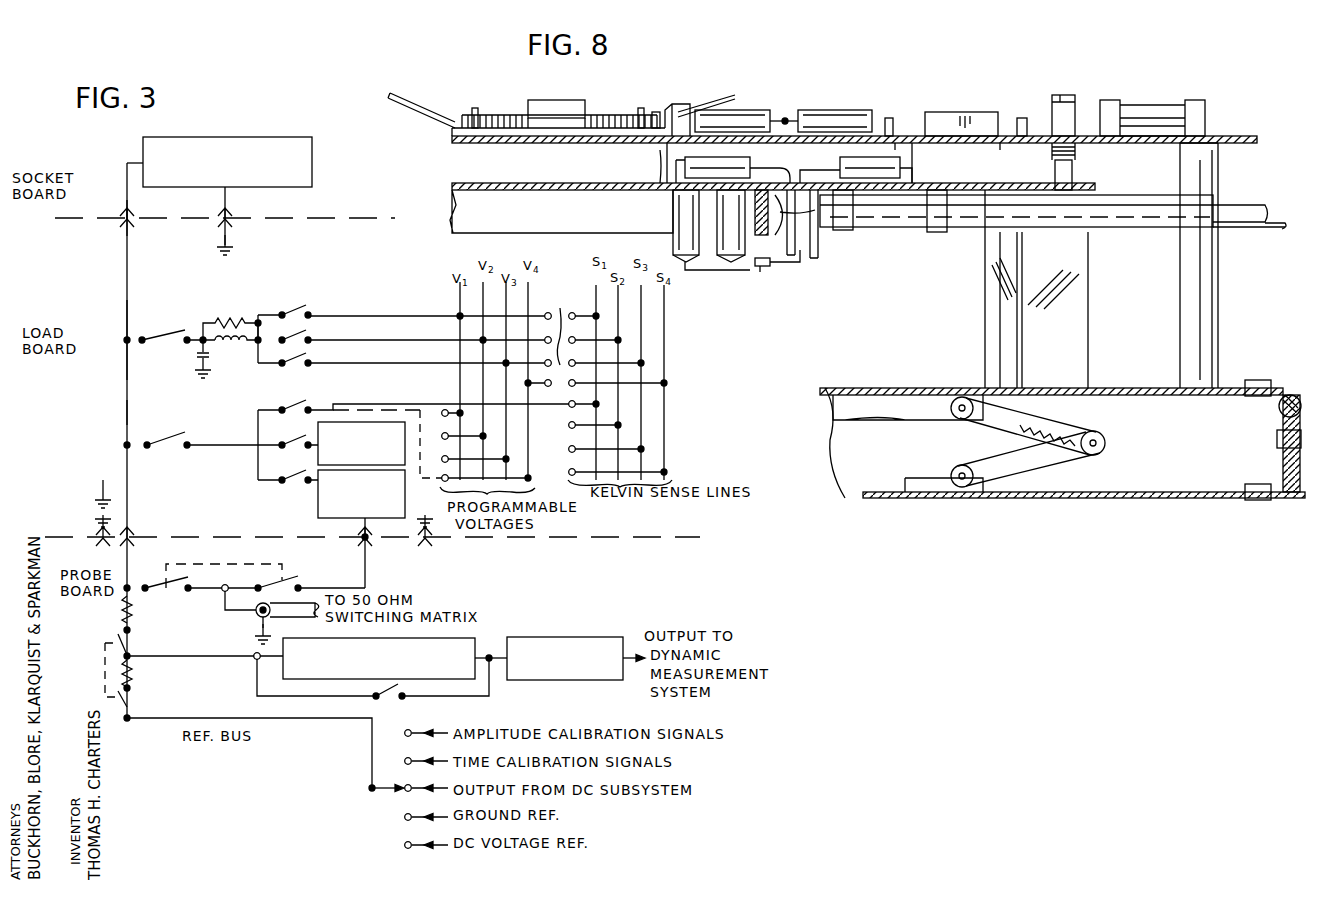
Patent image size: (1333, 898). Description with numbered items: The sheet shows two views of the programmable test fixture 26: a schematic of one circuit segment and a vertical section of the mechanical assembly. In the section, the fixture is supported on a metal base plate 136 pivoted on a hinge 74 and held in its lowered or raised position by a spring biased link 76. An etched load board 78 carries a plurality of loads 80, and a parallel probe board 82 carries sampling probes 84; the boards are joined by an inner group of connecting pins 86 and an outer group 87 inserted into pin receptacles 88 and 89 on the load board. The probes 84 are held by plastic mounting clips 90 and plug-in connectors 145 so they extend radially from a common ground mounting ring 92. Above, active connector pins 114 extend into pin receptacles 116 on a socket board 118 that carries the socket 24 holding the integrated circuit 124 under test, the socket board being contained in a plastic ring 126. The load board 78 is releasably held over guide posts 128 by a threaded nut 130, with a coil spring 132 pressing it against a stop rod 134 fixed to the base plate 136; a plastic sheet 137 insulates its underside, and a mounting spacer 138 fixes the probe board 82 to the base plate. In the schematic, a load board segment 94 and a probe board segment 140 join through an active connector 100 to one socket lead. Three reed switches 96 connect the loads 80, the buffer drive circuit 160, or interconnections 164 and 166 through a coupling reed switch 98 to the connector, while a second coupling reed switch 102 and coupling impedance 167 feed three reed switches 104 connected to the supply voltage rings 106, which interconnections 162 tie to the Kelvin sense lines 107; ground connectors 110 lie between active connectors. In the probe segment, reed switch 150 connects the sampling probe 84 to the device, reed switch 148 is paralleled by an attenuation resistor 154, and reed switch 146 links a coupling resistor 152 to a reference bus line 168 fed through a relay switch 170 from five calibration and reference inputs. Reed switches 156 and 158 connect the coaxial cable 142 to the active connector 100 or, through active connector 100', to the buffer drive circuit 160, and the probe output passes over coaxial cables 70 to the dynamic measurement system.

In FIG. 8, the socket 24 is at (526, 120).
In FIG. 8, the programmable test fixture 26 is at (1230, 112).
In FIG. 3, the coaxial cables 70 is at (631, 648).
In FIG. 8, the hinge 74 is at (1245, 368).
In FIG. 8, the spring biased link 76 is at (1098, 438).
In FIG. 8, the load board 78 is at (1022, 118).
In FIG. 3, the loads 80 is at (390, 422).
In FIG. 8, the loads 80 is at (972, 112).
In FIG. 8, the probe board 82 is at (935, 183).
In FIG. 3, the sampling probe 84 is at (582, 637).
In FIG. 8, the sampling probe 84 is at (920, 228).
In FIG. 8, the inner group of connecting pins 86 is at (685, 175).
In FIG. 8, the outer group of connecting pins 87 is at (895, 150).
In FIG. 8, the pin receptacles 88 is at (678, 108).
In FIG. 8, the pin receptacles 89 is at (892, 118).
In FIG. 8, the mounting clips 90 is at (850, 228).
In FIG. 8, the common ground mounting ring 92 is at (596, 222).
In FIG. 3, the load board segment 94 is at (108, 367).
In FIG. 3, the reed switches 96 is at (282, 477).
In FIG. 8, the reed switches 96 is at (845, 110).
In FIG. 3, the coupling reed switch 98 is at (176, 434).
In FIG. 8, the coupling reed switch 98 is at (787, 118).
In FIG. 3, the active connector 100 is at (95, 412).
In FIG. 3, the active connector 100' is at (384, 553).
In FIG. 3, the second coupling reed switch 102 is at (165, 330).
In FIG. 8, the second coupling reed switch 102 is at (750, 110).
In FIG. 3, the reed switches 104 is at (280, 338).
In FIG. 8, the reed switches 104 is at (1152, 105).
In FIG. 3, the supply voltage rings 106 is at (506, 310).
In FIG. 3, the sense lines 107 is at (598, 290).
In FIG. 3, the ground connectors 110 is at (103, 486).
In FIG. 3, the connecting pins 114 is at (133, 203).
In FIG. 8, the connecting pins 114 is at (500, 108).
In FIG. 8, the pin receptacles 116 is at (652, 118).
In FIG. 3, the socket board 118 is at (120, 155).
In FIG. 8, the socket board 118 is at (545, 140).
In FIG. 3, the integrated circuit 124 is at (249, 137).
In FIG. 8, the integrated circuit 124 is at (575, 100).
In FIG. 8, the plastic ring 126 is at (710, 100).
In FIG. 8, the guide posts 128 is at (1074, 174).
In FIG. 8, the threaded nut 130 is at (1075, 110).
In FIG. 8, the coil spring 132 is at (1078, 156).
In FIG. 8, the stop rod 134 is at (1218, 310).
In FIG. 8, the base plate 136 is at (1120, 388).
In FIG. 8, the sheet of plastic material 137 is at (1005, 157).
In FIG. 8, the mounting spacer 138 is at (984, 303).
In FIG. 3, the probe board segment 140 is at (112, 609).
In FIG. 3, the coaxial cable 142 is at (285, 619).
In FIG. 8, the coaxial cable 142 is at (1275, 228).
In FIG. 8, the plug-in connectors 145 is at (795, 222).
In FIG. 3, the reed switch 146 is at (133, 697).
In FIG. 8, the reed switch 146 is at (806, 240).
In FIG. 3, the reed switch 148 is at (388, 699).
In FIG. 8, the reed switch 148 is at (725, 263).
In FIG. 3, the reed switch 150 is at (130, 648).
In FIG. 8, the reed switch 150 is at (672, 240).
In FIG. 3, the coupling resistor 152 is at (134, 677).
In FIG. 8, the coupling resistor 152 is at (760, 268).
In FIG. 3, the attenuation resistor 154 is at (404, 638).
In FIG. 8, the attenuation resistor 154 is at (792, 256).
In FIG. 3, the reed switch 156 is at (172, 590).
In FIG. 8, the reed switch 156 is at (665, 154).
In FIG. 3, the reed switch 158 is at (298, 582).
In FIG. 8, the reed switch 158 is at (860, 157).
In FIG. 3, the buffer drive circuit 160 is at (318, 500).
In FIG. 3, the interconnections 162 is at (560, 360).
In FIG. 3, the interconnections 164 is at (554, 408).
In FIG. 3, the interconnection 166 is at (430, 420).
In FIG. 3, the coupling impedance 167 is at (228, 350).
In FIG. 3, the reference bus line 168 is at (345, 722).
In FIG. 3, the relay switch 170 is at (383, 798).